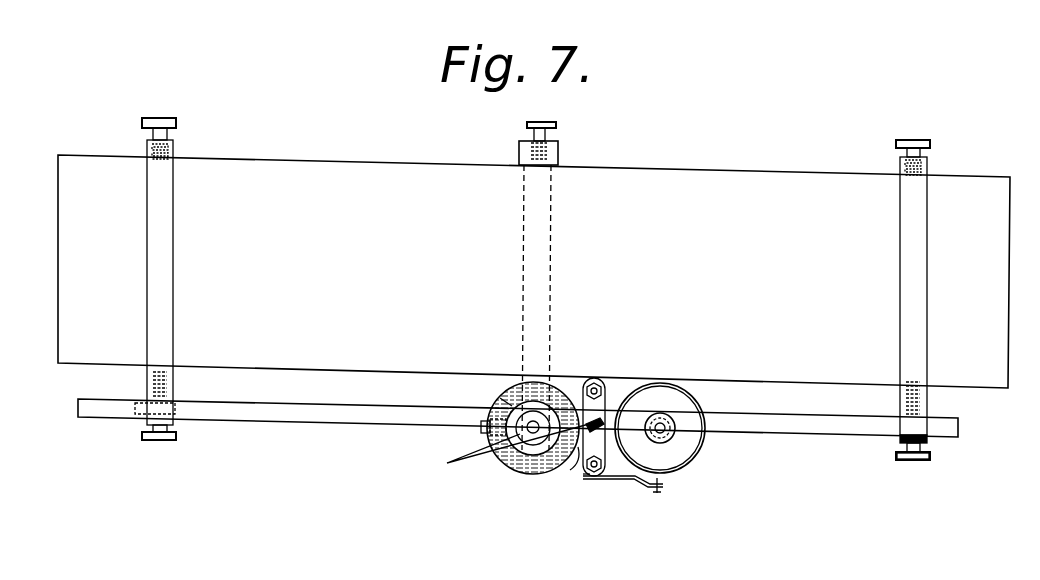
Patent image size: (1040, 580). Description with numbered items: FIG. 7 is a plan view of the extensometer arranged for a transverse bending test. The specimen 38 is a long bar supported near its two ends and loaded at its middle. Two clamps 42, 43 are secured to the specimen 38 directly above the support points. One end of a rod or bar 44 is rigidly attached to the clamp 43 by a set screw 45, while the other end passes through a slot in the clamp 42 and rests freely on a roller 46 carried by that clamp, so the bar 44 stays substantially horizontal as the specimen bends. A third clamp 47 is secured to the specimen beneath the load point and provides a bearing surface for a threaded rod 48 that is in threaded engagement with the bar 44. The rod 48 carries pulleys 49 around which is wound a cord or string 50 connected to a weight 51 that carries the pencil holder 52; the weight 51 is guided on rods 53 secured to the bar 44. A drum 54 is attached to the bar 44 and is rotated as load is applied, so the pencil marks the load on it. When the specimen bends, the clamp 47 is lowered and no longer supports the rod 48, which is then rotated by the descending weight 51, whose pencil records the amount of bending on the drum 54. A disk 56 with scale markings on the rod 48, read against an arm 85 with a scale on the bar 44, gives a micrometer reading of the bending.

The specimen 38 is at (335, 171).
The clamp 42 is at (148, 250).
The clamp 43 is at (922, 269).
The rod or bar 44 is at (108, 410).
The set screw 45 is at (925, 454).
The roller 46 is at (136, 406).
The clamp 47 is at (558, 153).
The rod 48 is at (530, 430).
The pulleys 49 is at (509, 451).
The cord or string 50 is at (578, 450).
The weight 51 is at (586, 476).
The pencil holder 52 is at (618, 480).
The rods 53 is at (603, 380).
The drum 54 is at (690, 448).
The disk 56 is at (500, 398).
The arm 85 is at (481, 426).